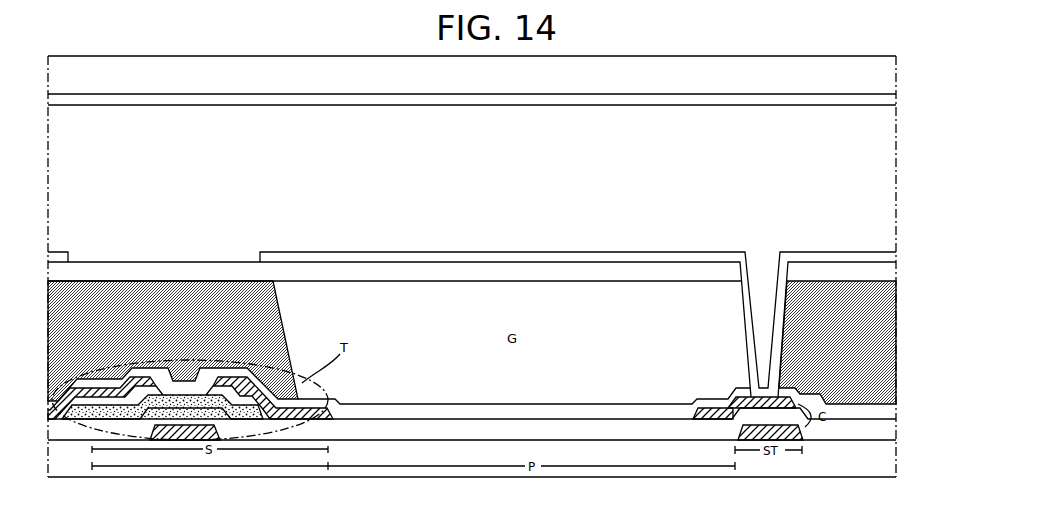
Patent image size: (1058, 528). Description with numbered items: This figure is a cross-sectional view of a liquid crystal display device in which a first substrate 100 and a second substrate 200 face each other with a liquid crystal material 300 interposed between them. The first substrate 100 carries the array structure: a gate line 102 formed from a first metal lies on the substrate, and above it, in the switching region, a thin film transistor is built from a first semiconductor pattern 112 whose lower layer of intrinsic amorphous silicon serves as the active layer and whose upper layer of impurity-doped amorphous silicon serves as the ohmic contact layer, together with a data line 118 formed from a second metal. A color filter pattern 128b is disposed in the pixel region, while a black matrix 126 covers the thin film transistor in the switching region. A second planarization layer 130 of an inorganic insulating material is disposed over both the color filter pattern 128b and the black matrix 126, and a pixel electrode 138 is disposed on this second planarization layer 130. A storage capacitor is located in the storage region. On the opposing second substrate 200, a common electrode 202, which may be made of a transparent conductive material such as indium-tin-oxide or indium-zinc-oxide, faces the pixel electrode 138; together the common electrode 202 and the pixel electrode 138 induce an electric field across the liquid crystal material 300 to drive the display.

The substrate 100 is at (873, 468).
The gate line 102 is at (798, 438).
The first semiconductor pattern 112 is at (226, 392).
The data line 118 is at (86, 388).
The black matrix 126 is at (862, 278).
The color filter pattern 128b is at (505, 280).
The second planarization layer 130 is at (405, 260).
The pixel electrode 138 is at (572, 252).
The second substrate 200 is at (876, 80).
The common electrode 202 is at (480, 106).
The liquid crystal material 300 is at (877, 158).